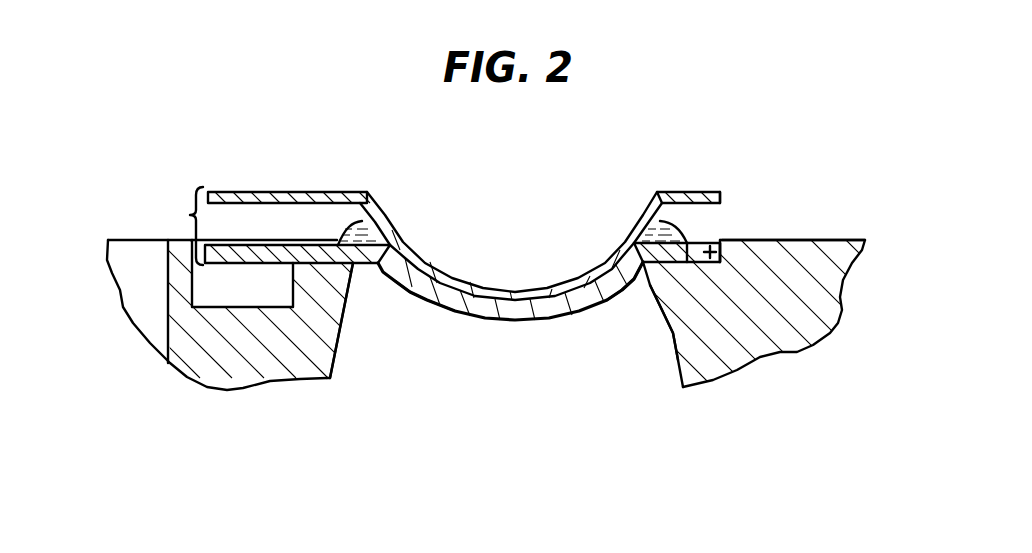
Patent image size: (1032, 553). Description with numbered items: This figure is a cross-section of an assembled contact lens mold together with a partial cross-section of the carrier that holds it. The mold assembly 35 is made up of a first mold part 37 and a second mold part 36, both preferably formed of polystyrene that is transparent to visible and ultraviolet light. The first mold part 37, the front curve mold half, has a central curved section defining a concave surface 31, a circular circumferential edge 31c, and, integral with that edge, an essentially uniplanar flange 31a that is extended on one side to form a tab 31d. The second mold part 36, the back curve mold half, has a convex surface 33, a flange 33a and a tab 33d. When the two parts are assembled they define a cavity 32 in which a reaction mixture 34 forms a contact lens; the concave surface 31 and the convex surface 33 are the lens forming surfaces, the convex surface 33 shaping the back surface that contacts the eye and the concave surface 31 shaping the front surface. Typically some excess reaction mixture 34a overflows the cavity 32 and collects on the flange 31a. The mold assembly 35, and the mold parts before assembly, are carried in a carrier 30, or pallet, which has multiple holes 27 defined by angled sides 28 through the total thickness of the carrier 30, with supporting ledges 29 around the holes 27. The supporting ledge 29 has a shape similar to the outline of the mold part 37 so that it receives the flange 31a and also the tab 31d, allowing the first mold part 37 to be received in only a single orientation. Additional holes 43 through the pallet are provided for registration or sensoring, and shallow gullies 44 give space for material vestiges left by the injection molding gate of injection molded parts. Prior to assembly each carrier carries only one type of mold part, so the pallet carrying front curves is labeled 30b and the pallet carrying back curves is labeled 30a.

The holes 27 is at (498, 356).
The angled sides 28 is at (673, 333).
The supporting ledge 29 is at (340, 270).
The carrier 30 is at (798, 300).
The pallet carrying back curves 30a is at (332, 263).
The pallet carrying front curves 30b is at (818, 263).
The concave surface 31 is at (545, 323).
The flange 31a is at (698, 241).
The circular circumferential edge 31c is at (643, 282).
The tab 31d is at (232, 263).
The cavity 32 is at (510, 294).
The convex surface 33 is at (440, 277).
The flange 33a is at (677, 192).
The tab 33d is at (262, 192).
The reaction mixture 34 is at (426, 300).
The excess reaction mixture 34a is at (353, 222).
The mold assembly 35 is at (180, 226).
The second mold part 36 is at (725, 195).
The first mold part 37 is at (718, 247).
The additional holes 43 is at (130, 273).
The shallow gullies 44 is at (197, 292).